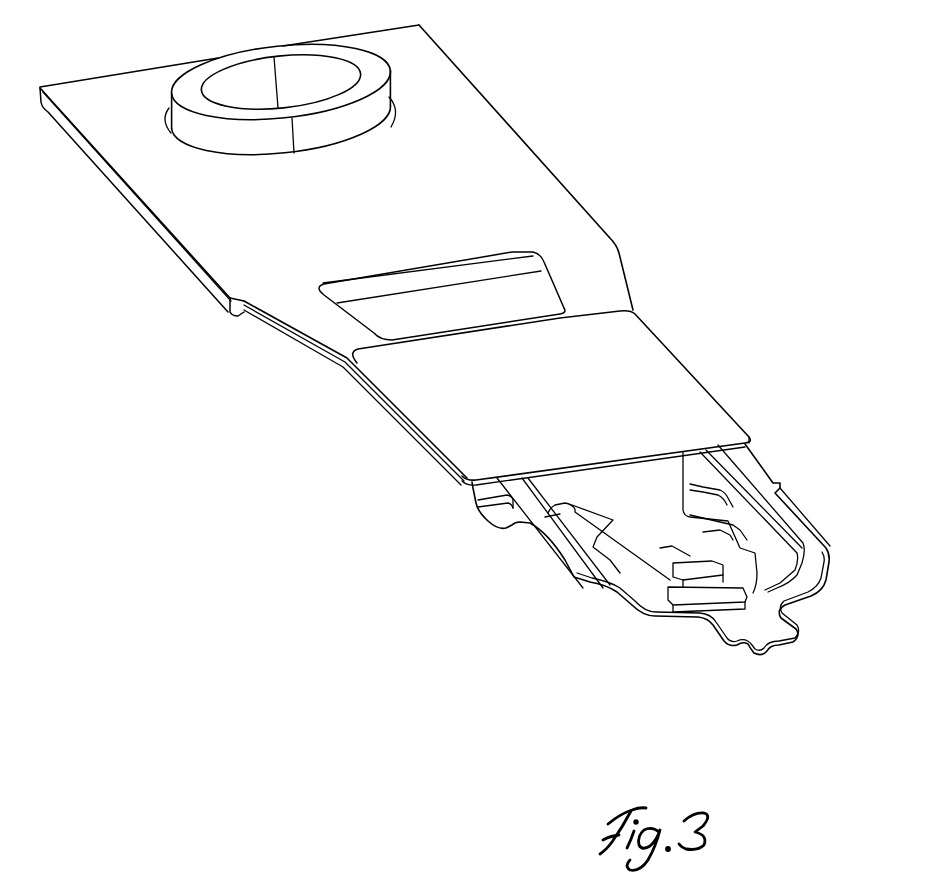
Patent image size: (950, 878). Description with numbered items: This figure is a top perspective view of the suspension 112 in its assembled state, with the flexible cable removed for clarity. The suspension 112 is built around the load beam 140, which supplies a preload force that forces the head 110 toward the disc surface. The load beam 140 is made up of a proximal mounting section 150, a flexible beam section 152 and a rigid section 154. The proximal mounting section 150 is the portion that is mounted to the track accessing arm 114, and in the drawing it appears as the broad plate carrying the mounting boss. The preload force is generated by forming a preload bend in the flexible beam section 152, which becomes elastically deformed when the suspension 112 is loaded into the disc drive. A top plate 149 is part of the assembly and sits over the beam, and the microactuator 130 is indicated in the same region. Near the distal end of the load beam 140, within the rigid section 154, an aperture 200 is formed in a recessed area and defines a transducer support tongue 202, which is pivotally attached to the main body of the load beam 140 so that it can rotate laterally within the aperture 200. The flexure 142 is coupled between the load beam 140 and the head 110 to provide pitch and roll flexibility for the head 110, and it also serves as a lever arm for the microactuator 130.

The suspension 112 is at (708, 148).
The proximal mounting section 150 is at (460, 110).
The track accessing arm 114 is at (140, 212).
The flexible beam section 152 is at (622, 273).
The load beam 140 is at (270, 327).
The top plate 149 is at (440, 405).
The microactuator 130 is at (698, 373).
The rigid section 154 is at (763, 460).
The flexure 142 is at (580, 485).
The aperture 200 is at (587, 530).
The transducer support tongue 202 is at (670, 563).
The head 110 is at (670, 598).